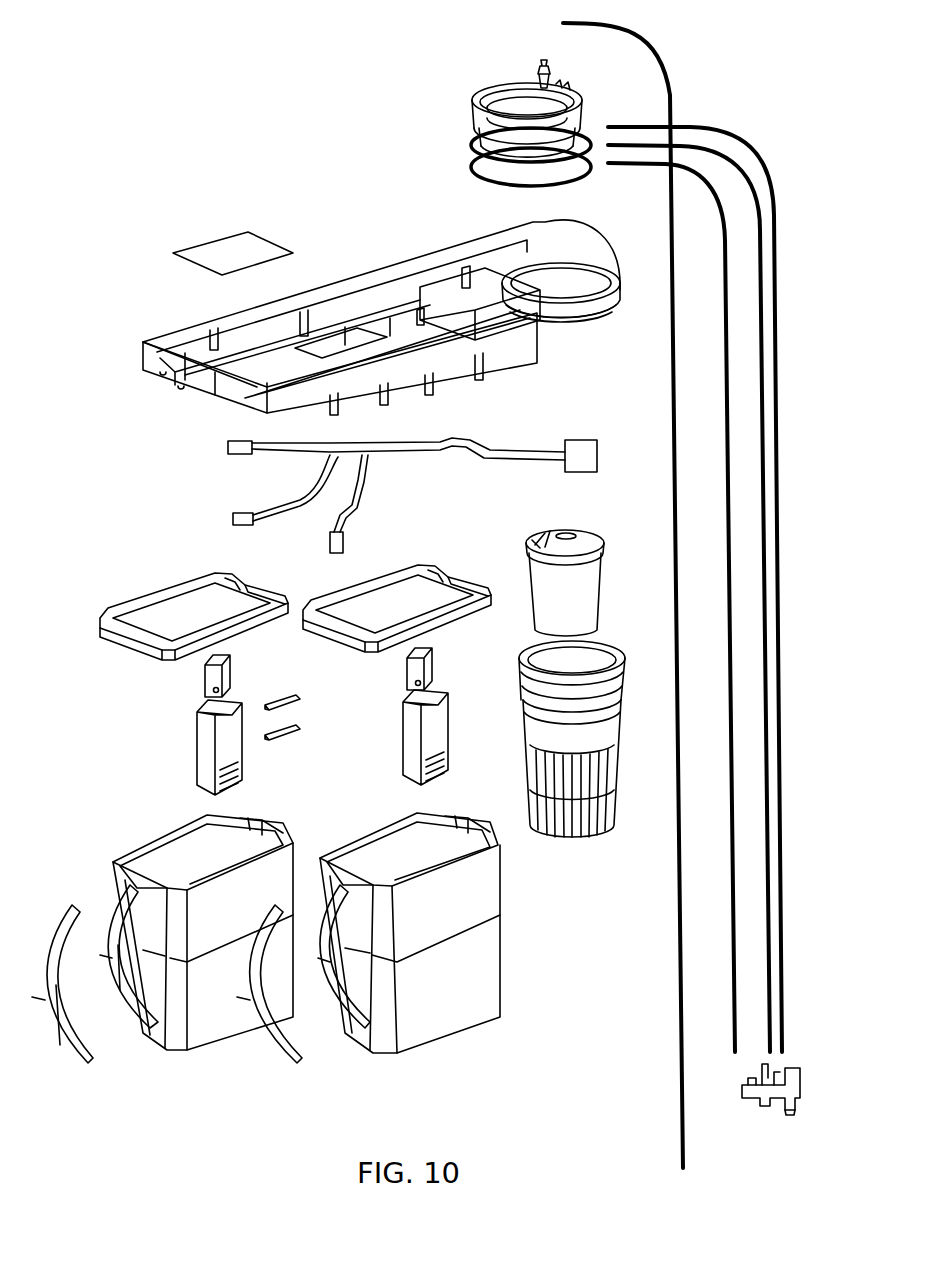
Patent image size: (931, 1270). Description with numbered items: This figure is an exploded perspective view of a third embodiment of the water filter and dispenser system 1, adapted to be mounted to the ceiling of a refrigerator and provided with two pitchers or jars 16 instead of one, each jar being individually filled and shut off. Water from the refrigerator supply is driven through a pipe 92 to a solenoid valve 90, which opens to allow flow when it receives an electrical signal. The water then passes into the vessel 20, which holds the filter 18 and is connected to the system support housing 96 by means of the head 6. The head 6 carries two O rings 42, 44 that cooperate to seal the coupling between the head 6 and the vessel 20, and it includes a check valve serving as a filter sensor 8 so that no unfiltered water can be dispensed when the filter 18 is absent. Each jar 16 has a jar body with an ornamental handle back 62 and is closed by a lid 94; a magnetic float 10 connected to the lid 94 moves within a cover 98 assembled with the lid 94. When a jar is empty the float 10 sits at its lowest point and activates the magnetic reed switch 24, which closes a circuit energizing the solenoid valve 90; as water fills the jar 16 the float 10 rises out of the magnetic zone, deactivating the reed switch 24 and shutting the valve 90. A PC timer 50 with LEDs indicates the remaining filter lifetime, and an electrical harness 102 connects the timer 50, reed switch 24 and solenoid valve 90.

The water filter and dispenser system 1 is at (716, 52).
The head 6 is at (474, 98).
The filter sensor check valve 8 is at (537, 62).
The O ring 42 is at (470, 142).
The O ring 44 is at (476, 178).
The pipe 92 is at (762, 182).
The solenoid valve 90 is at (786, 1090).
The PC timer 50 is at (218, 245).
The system support housing 96 is at (185, 333).
The electrical harness 102 is at (540, 440).
The lid 94 is at (327, 570).
The magnetic float 10 is at (407, 667).
The magnetic reed switch 24 is at (298, 723).
The cover 98 is at (405, 728).
The filter 18 is at (570, 582).
The vessel 20 is at (595, 733).
The pitcher or jar 16 is at (390, 818).
The handle back 62 is at (45, 997).